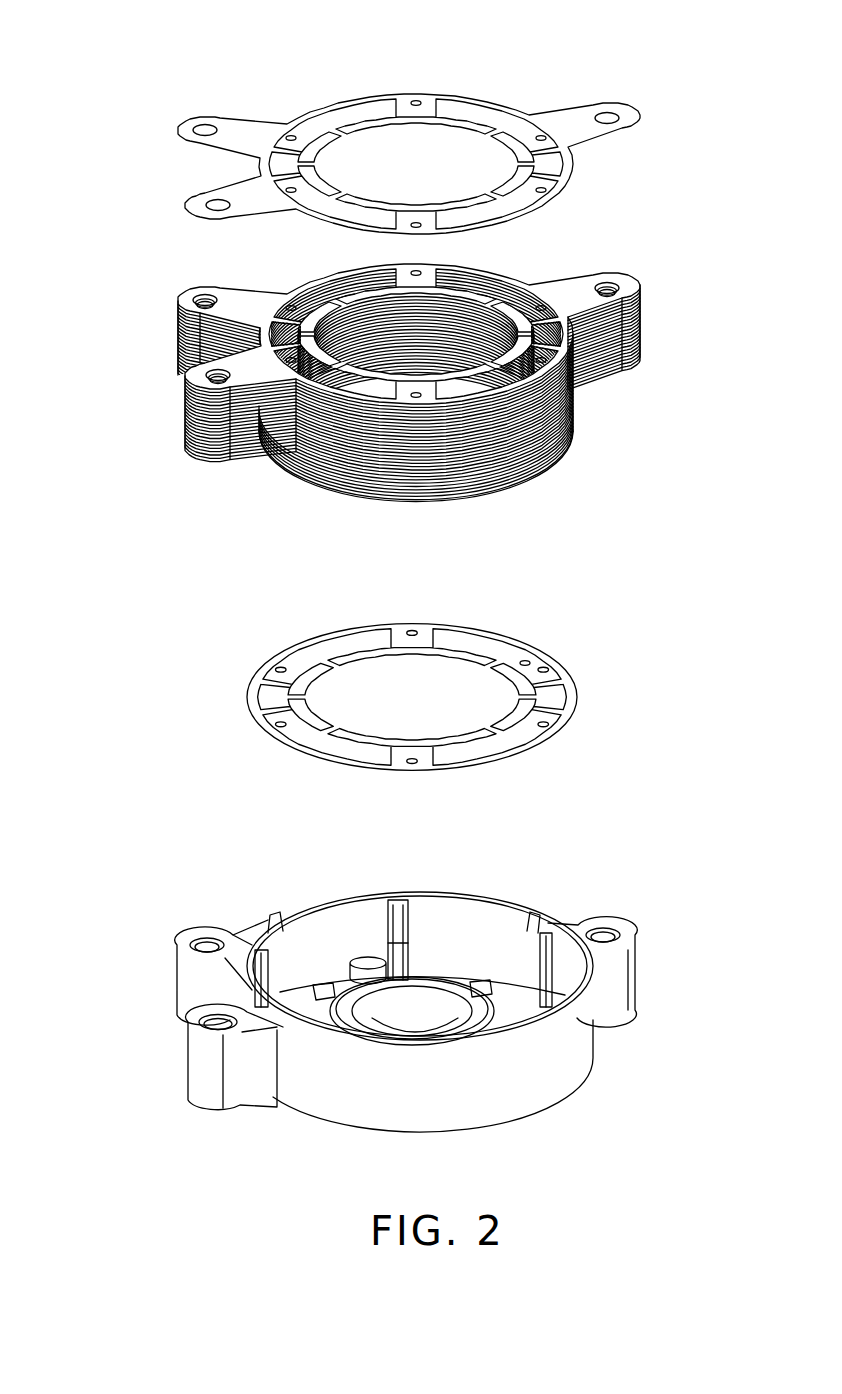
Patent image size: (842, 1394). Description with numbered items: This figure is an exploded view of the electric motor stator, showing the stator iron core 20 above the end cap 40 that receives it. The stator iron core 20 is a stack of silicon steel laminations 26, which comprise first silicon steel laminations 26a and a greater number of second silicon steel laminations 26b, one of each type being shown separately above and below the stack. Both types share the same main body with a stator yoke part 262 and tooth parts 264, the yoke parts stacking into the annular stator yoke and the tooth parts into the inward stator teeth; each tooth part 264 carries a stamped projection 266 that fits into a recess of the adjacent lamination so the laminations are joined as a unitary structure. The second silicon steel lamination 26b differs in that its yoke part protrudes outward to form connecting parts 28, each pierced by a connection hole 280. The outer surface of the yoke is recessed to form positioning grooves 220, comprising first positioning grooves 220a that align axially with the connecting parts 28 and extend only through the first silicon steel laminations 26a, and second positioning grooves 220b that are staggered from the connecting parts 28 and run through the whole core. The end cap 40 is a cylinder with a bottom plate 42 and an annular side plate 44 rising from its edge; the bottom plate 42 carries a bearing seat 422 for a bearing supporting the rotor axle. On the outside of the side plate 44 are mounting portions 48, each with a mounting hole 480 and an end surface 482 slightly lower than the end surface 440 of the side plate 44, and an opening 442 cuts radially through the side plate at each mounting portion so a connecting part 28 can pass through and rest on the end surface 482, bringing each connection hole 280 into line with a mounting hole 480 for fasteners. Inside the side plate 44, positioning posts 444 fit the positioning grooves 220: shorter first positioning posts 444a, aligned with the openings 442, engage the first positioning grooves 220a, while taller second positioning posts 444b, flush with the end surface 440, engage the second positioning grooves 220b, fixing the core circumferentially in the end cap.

The stator iron core 20 is at (188, 382).
The silicon steel laminations 26 is at (692, 392).
The first silicon steel laminations 26a is at (527, 478).
The second silicon steel laminations 26b is at (203, 165).
The connecting parts 28 is at (570, 122).
The connection hole 280 is at (609, 117).
The stator yoke part 262 is at (345, 102).
The tooth part 264 is at (408, 112).
The projection 266 is at (528, 663).
The positioning grooves 220 is at (395, 562).
The first positioning grooves 220a is at (282, 460).
The second positioning grooves 220b is at (565, 207).
The end cap 40 is at (655, 966).
The bottom plate 42 is at (500, 1075).
The annular side plate 44 is at (532, 1098).
The bearing seat 422 is at (378, 1015).
The end surface of the side plate 440 is at (302, 905).
The opening 442 is at (262, 925).
The positioning posts 444 is at (671, 836).
The first positioning posts 444a is at (547, 932).
The second positioning posts 444b is at (398, 918).
The mounting portions 48 is at (200, 970).
The mounting hole 480 is at (192, 1032).
The end surface of the mounting portion 482 is at (233, 1027).